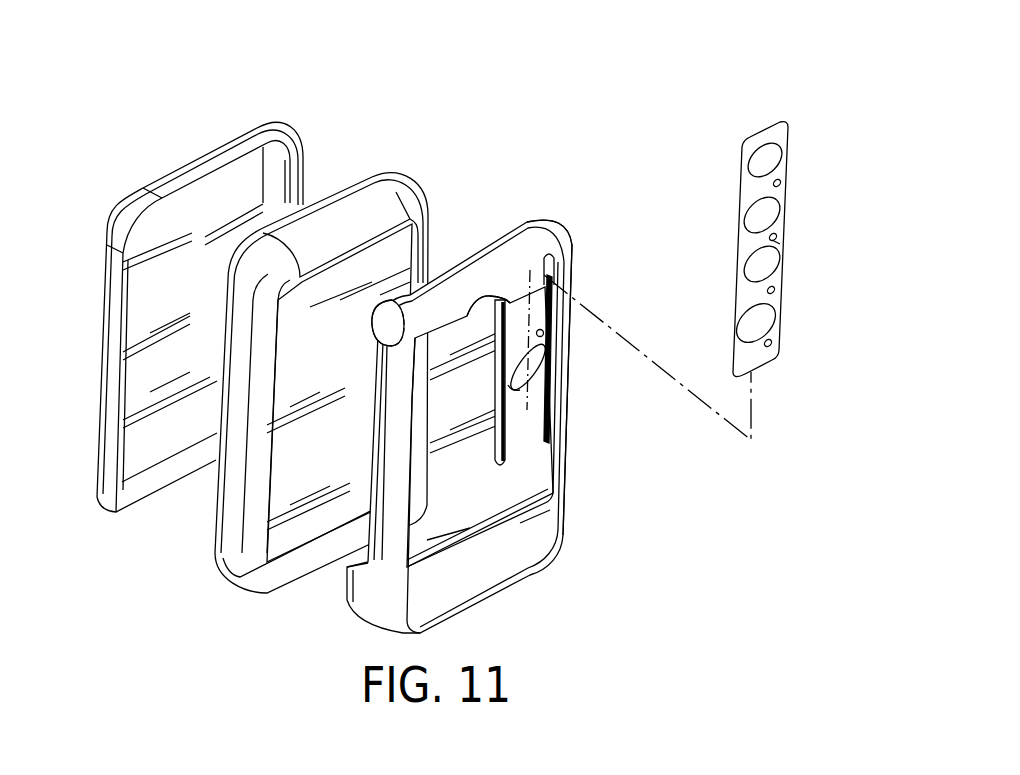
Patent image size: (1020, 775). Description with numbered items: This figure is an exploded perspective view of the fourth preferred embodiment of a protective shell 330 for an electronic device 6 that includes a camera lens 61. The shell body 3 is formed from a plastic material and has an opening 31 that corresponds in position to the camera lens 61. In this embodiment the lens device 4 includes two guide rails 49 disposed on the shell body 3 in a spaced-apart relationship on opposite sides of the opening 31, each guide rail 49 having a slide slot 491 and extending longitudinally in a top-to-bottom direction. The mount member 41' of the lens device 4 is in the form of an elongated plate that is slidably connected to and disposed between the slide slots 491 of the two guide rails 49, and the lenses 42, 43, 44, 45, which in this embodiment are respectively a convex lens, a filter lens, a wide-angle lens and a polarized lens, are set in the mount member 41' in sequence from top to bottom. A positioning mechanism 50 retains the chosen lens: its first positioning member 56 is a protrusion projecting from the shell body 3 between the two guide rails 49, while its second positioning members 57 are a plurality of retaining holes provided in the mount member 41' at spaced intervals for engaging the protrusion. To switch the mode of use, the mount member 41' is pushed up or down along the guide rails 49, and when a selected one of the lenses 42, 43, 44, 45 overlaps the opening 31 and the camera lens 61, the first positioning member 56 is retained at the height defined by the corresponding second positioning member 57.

The electronic device 6 is at (332, 168).
The camera lens 61 is at (378, 333).
The shell body 3 is at (423, 371).
The protective shell 330 is at (543, 203).
The slide slot 491 is at (617, 260).
The guide rail 49 is at (495, 410).
The first positioning member 56 is at (543, 336).
The opening 31 is at (540, 374).
The lens device 4 is at (771, 199).
The mount member 41' is at (754, 223).
The lens 42 is at (754, 160).
The lens 43 is at (752, 222).
The lens 44 is at (750, 268).
The lens 45 is at (747, 326).
The second positioning member 57 is at (776, 235).
The positioning mechanism 50 is at (786, 246).